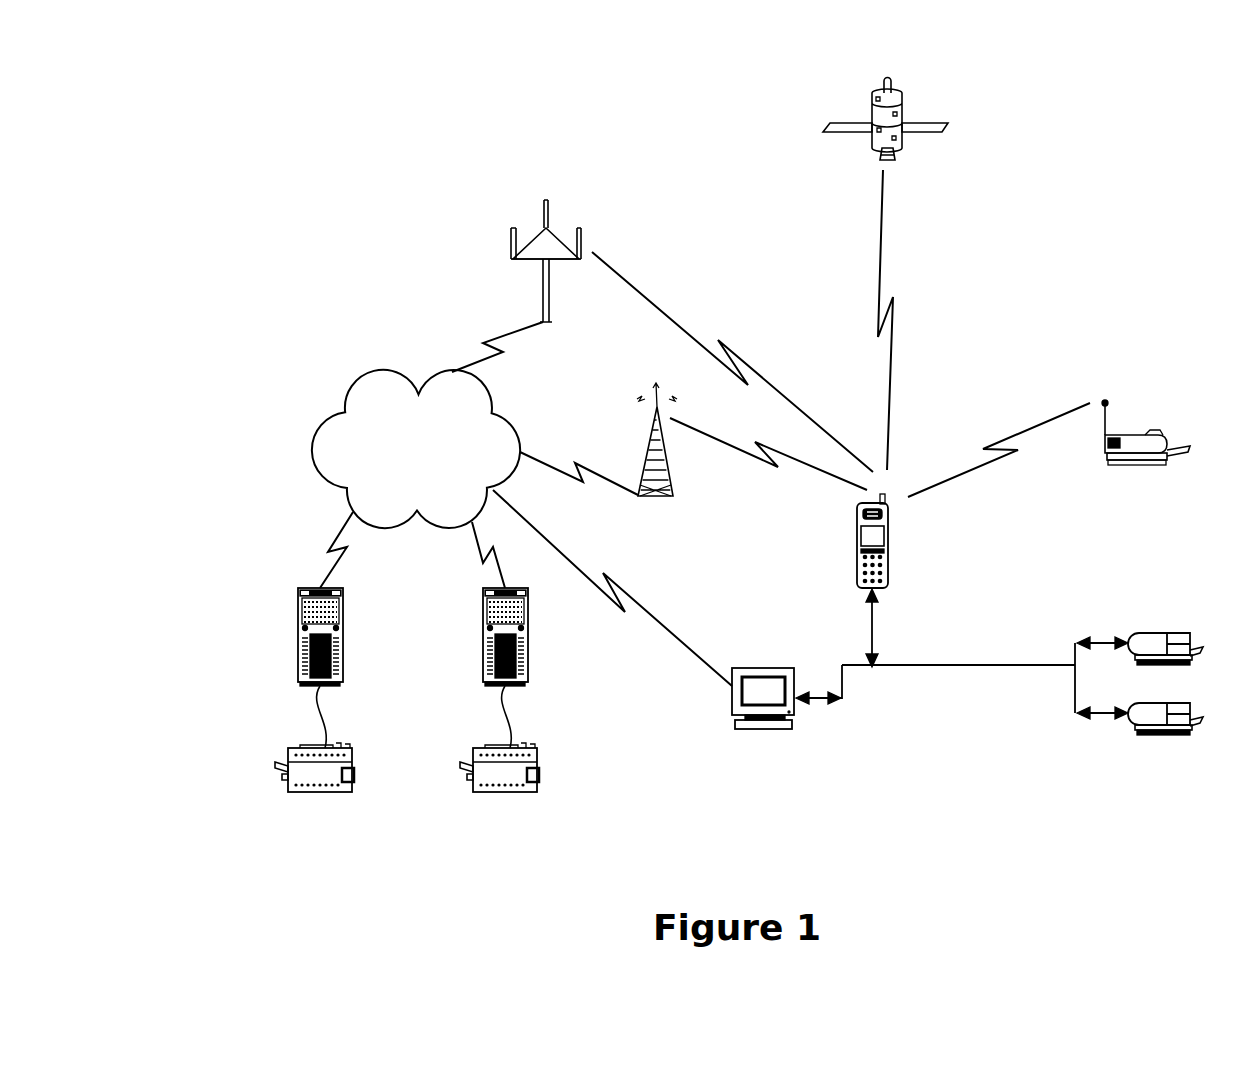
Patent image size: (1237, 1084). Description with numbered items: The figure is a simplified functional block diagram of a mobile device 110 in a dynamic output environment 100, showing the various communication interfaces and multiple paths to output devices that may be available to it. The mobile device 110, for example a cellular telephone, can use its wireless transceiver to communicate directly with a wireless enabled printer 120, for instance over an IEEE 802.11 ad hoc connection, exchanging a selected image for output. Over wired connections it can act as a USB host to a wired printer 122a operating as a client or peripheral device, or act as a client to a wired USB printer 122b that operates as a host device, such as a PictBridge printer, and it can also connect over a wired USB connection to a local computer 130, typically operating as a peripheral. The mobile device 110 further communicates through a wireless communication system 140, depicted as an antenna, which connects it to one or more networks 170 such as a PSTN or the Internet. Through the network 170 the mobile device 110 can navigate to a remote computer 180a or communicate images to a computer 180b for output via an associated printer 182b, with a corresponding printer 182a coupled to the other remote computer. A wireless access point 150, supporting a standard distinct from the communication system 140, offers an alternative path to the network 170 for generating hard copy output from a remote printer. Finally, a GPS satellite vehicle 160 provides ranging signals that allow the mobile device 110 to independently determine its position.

The dynamic output environment 100 is at (695, 449).
The mobile device 110 is at (888, 588).
The wireless enabled printer 120 is at (1125, 465).
The USB wired printer 122a is at (1158, 633).
The wired USB printer 122b is at (1152, 725).
The local computer 130 is at (755, 731).
The wireless communication system 140 is at (546, 322).
The wireless access point 150 is at (660, 496).
The GPS satellite vehicle 160 is at (903, 147).
The network 170 is at (416, 449).
The remote computer 180a is at (343, 680).
The computer 180b is at (530, 680).
The printer 182a is at (340, 792).
The remote printer 182b is at (525, 792).